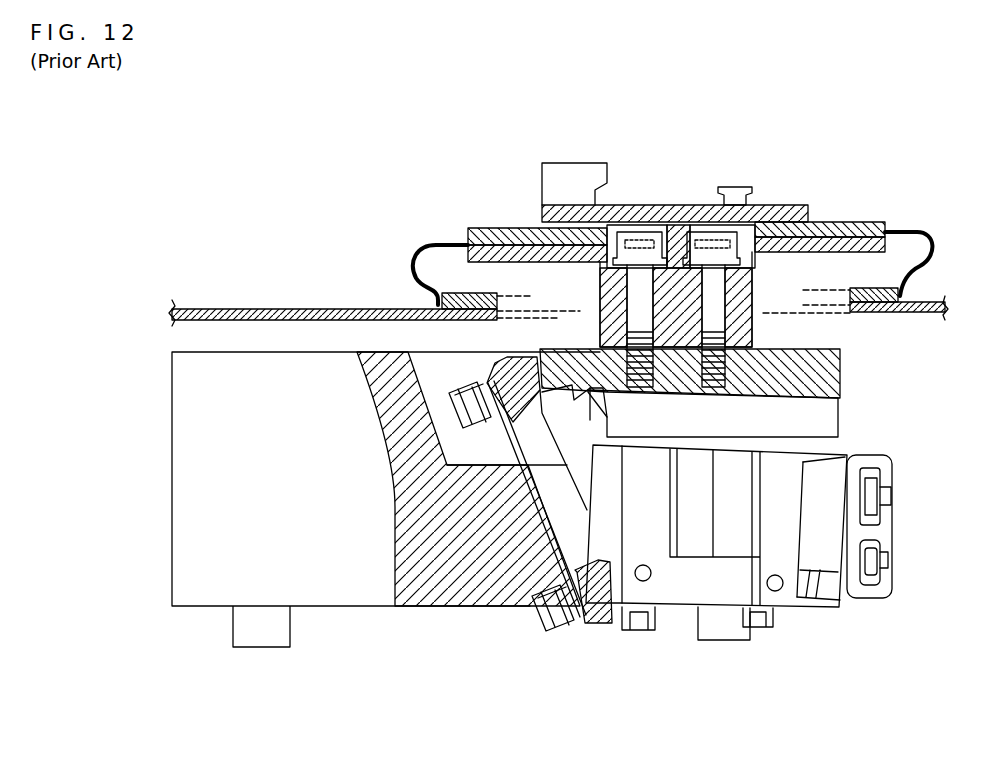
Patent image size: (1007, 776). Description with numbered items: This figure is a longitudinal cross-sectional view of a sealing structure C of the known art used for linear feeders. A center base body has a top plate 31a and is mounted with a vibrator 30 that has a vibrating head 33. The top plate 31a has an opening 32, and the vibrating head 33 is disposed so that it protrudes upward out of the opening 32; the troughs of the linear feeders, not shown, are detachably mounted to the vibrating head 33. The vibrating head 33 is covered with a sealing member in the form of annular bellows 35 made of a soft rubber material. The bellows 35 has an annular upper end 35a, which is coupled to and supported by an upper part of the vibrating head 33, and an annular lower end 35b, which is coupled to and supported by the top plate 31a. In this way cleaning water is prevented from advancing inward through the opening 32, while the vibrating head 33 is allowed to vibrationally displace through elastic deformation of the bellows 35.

The vibrator 30 is at (618, 627).
The top plate 31a is at (242, 308).
The opening 32 is at (818, 310).
The vibrating head 33 is at (650, 205).
The annular bellows 35 is at (433, 243).
The annular upper end 35a is at (488, 227).
The annular lower end 35b is at (467, 310).
The sealing structure C is at (404, 272).